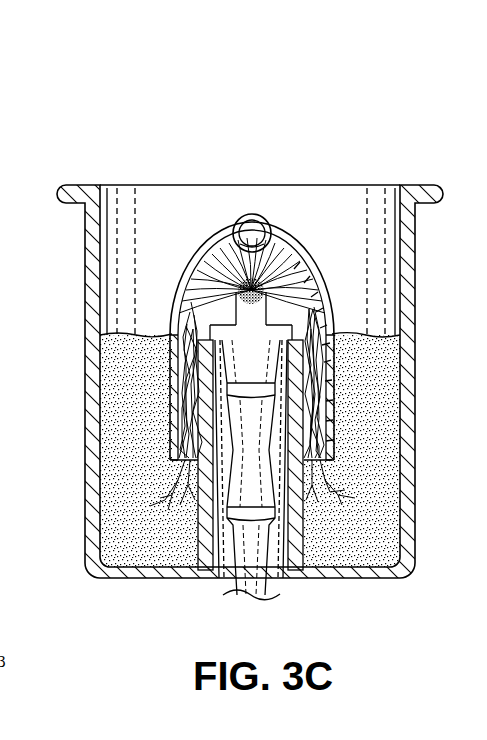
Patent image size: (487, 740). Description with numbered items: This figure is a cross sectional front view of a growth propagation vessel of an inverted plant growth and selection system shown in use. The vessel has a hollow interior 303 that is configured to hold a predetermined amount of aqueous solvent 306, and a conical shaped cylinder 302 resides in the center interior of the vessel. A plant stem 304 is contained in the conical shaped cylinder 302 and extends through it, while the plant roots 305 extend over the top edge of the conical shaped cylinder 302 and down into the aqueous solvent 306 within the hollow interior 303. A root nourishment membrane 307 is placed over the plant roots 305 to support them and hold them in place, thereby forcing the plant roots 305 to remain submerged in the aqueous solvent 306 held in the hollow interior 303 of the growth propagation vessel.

The conical shaped cylinder 302 is at (303, 539).
The hollow interior 303 is at (138, 250).
The plant stem 304 is at (250, 543).
The plant roots 305 is at (230, 299).
The aqueous solvent 306 is at (130, 521).
The root nourishment membrane 307 is at (246, 206).